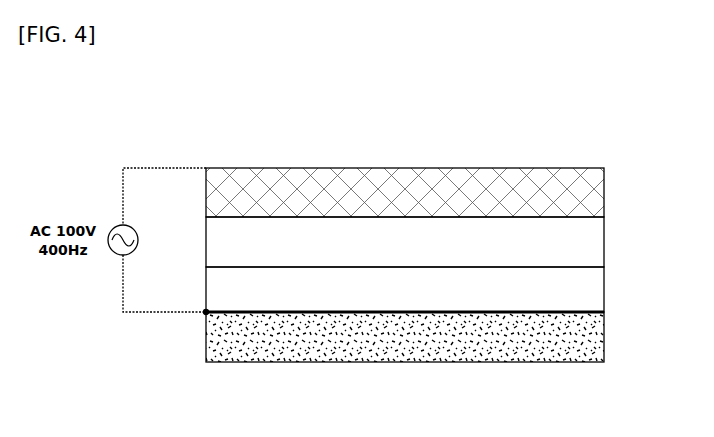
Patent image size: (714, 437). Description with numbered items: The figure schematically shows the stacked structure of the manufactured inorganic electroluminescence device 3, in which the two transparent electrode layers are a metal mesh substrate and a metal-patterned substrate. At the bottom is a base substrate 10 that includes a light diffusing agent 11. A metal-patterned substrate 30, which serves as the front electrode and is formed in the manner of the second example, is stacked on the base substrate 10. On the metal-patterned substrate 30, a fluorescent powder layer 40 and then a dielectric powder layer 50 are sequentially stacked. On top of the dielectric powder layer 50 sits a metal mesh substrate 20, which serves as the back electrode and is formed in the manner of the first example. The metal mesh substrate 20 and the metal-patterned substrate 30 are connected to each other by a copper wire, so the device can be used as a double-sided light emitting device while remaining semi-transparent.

The electroluminescence device 3 is at (446, 243).
The base substrate 10 is at (604, 338).
The light diffusing agent 11 is at (468, 345).
The metal mesh substrate 20 is at (604, 193).
The metal-patterned substrate 30 is at (530, 318).
The fluorescent powder layer 40 is at (604, 288).
The dielectric powder layer 50 is at (604, 240).